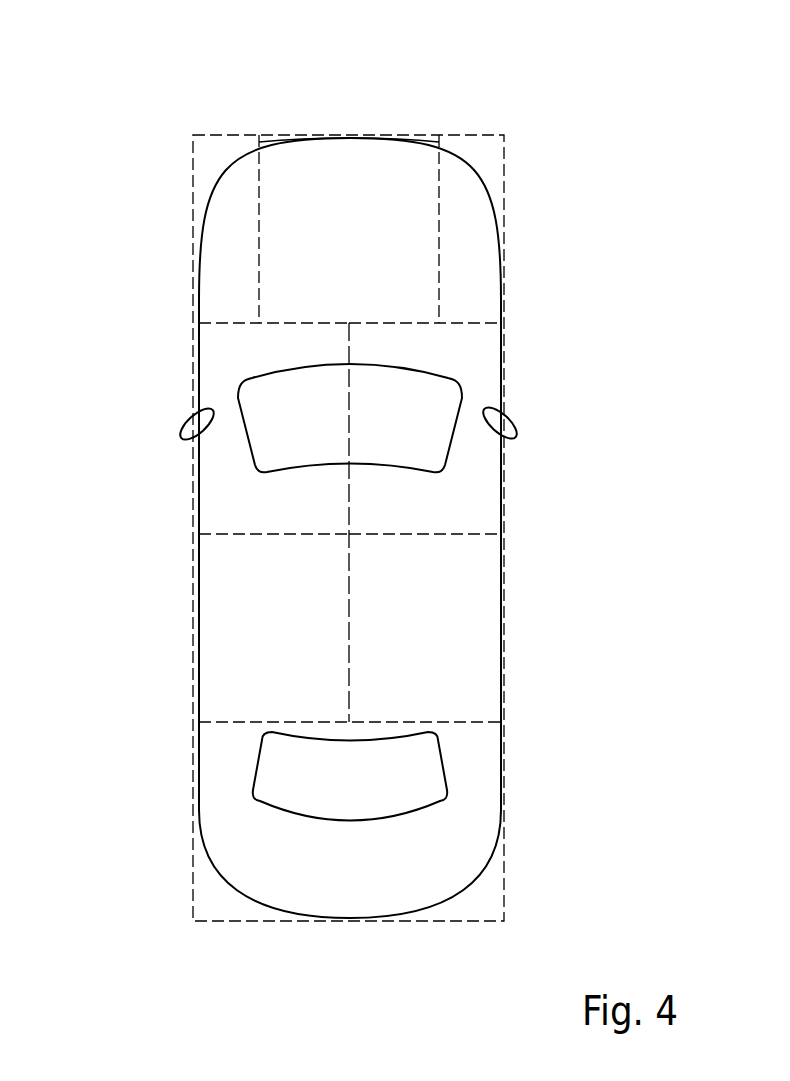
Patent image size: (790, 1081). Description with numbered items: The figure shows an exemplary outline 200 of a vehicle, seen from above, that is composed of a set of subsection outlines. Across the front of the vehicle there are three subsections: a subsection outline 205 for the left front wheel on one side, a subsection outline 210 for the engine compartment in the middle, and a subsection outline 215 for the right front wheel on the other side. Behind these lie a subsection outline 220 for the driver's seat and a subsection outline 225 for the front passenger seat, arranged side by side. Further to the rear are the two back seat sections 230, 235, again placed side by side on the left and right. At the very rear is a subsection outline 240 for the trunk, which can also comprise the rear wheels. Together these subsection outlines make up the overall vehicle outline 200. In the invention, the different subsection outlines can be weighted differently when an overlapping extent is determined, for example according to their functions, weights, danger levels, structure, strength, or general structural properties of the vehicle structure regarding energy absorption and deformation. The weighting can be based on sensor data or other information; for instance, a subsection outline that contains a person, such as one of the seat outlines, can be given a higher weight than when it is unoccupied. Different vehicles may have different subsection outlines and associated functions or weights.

The outline 200 is at (170, 106).
The subsection outline for the left front wheel 205 is at (195, 200).
The subsection outline for the engine compartment 210 is at (368, 133).
The subsection outline for the right front wheel 215 is at (505, 200).
The subsection outline for the driver's seat 220 is at (195, 372).
The subsection outline for the front passenger seat 225 is at (505, 372).
The back seat section 230 is at (195, 562).
The back seat section 235 is at (505, 562).
The subsection outline for the trunk 240 is at (195, 752).